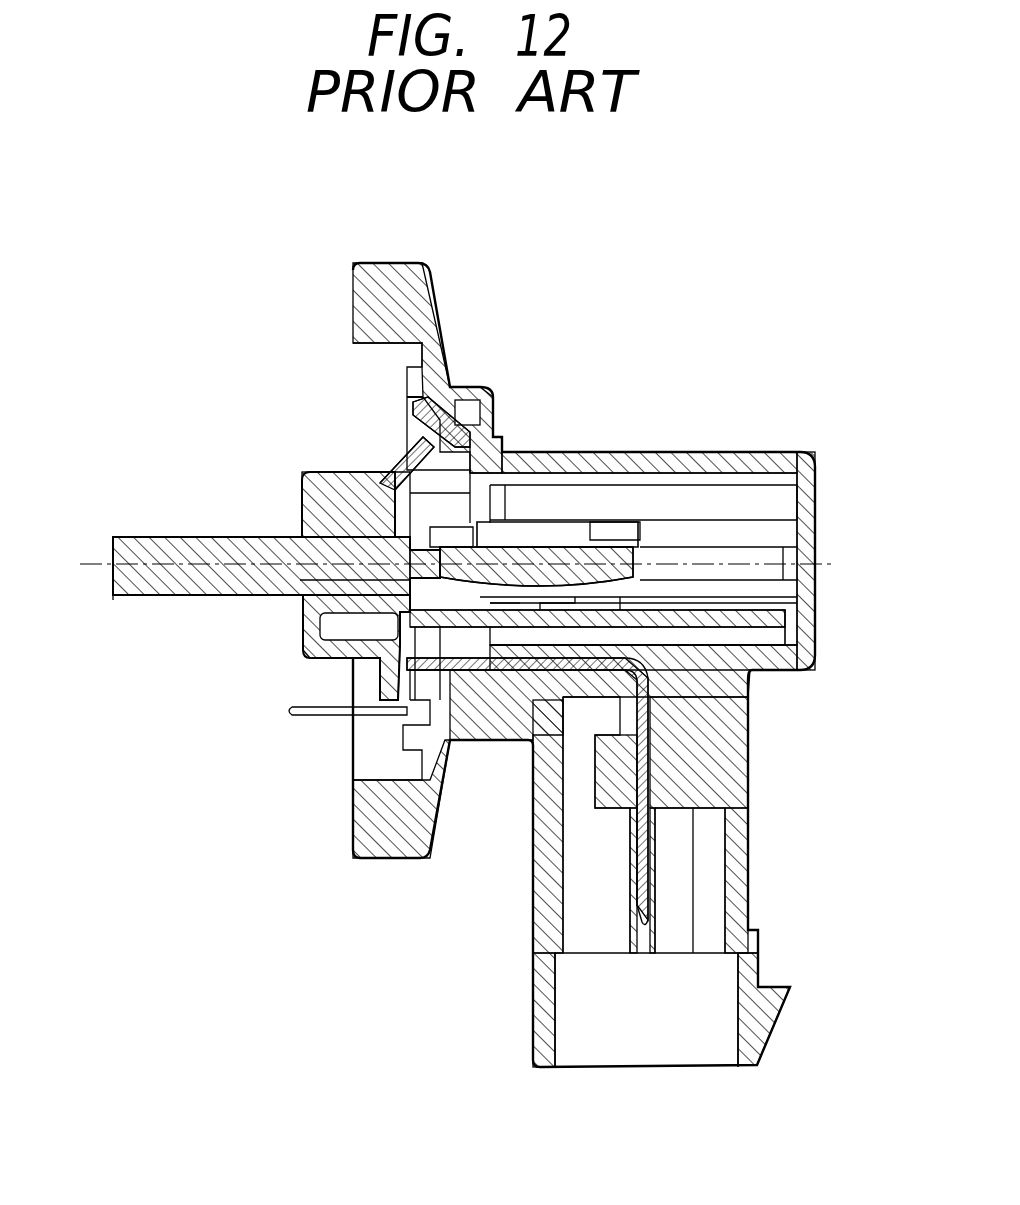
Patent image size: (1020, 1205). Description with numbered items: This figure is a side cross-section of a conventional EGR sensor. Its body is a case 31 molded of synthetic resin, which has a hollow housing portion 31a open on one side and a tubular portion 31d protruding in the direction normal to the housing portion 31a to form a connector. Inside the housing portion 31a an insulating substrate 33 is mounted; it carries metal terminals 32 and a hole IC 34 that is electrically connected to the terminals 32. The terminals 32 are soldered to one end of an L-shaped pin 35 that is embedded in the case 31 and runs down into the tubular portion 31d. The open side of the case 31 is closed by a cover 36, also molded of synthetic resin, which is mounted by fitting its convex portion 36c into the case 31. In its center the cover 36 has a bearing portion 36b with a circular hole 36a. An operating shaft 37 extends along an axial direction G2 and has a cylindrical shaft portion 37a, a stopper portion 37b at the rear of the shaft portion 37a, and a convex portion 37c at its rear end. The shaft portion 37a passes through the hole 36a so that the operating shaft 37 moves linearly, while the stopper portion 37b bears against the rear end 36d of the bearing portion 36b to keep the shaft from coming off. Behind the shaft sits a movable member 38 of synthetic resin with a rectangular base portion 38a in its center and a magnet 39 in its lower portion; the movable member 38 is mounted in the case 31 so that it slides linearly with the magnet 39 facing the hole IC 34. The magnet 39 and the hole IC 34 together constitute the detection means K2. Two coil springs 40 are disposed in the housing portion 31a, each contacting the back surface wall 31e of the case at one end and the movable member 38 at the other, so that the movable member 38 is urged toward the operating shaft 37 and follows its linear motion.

The case 31 is at (445, 280).
The housing portion 31a is at (752, 492).
The tubular portion 31d is at (750, 852).
The back surface wall 31e is at (808, 498).
The metal terminals 32 is at (455, 690).
The insulating substrate 33 is at (745, 650).
The hole IC 34 is at (600, 605).
The L-shaped pin 35 is at (636, 890).
The cover 36 is at (290, 467).
The circular hole 36a is at (318, 548).
The bearing portion 36b is at (306, 628).
The convex portion 36c is at (468, 432).
The rear end 36d is at (338, 472).
The operating shaft 37 is at (110, 528).
The shaft portion 37a is at (156, 596).
The stopper portion 37b is at (404, 487).
The convex portion 37c is at (312, 580).
The movable member 38 is at (568, 522).
The base portion 38a is at (608, 525).
The magnet 39 is at (540, 545).
The coil springs 40 is at (783, 556).
The detection means K2 is at (520, 605).
The axial direction G2 is at (112, 598).